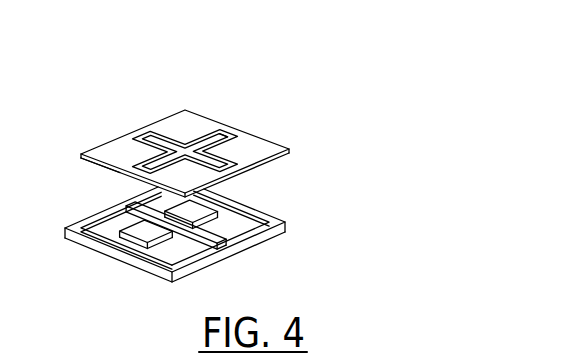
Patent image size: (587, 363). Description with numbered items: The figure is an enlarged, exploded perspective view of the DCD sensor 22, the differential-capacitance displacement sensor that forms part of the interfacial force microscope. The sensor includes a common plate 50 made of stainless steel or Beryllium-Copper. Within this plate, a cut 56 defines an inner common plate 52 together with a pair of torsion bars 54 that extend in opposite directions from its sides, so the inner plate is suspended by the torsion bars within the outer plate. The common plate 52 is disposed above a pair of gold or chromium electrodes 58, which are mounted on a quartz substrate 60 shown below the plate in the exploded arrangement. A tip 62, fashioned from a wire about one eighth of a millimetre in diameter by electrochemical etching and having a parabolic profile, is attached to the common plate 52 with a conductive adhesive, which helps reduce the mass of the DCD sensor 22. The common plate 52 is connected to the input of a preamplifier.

The DCD sensor 22 is at (343, 108).
The common plate 50 is at (250, 133).
The common plate 52 is at (184, 147).
The torsion bars 54 is at (143, 142).
The cut 56 is at (108, 163).
The electrodes 58 is at (230, 200).
The quartz substrate 60 is at (263, 243).
The tip 62 is at (214, 138).